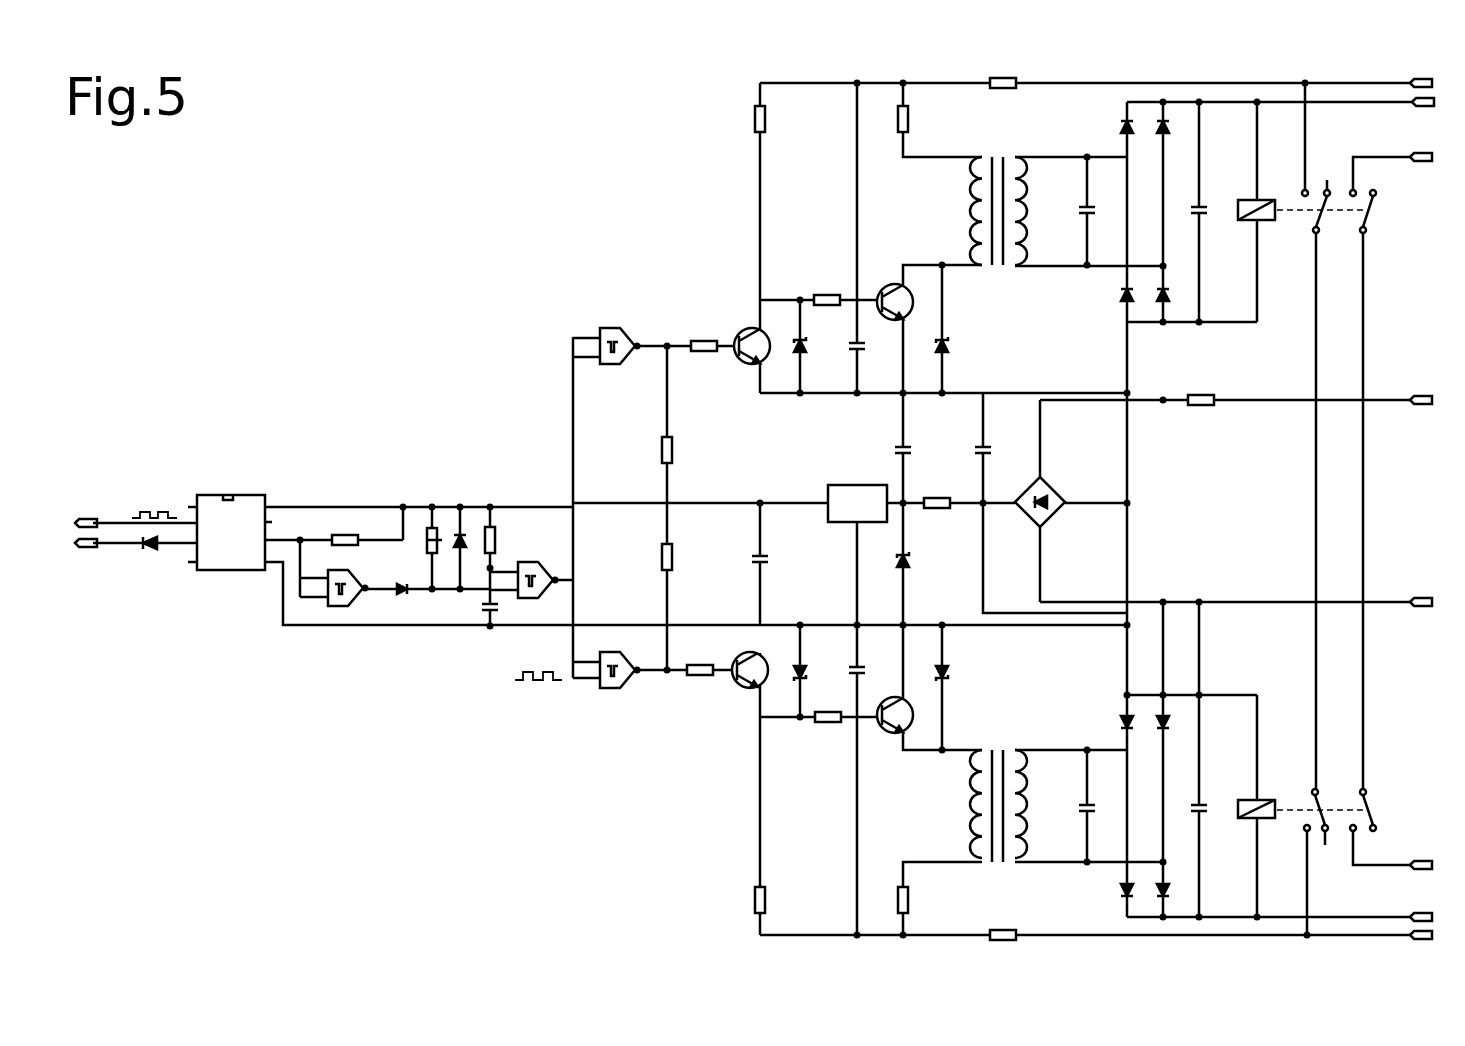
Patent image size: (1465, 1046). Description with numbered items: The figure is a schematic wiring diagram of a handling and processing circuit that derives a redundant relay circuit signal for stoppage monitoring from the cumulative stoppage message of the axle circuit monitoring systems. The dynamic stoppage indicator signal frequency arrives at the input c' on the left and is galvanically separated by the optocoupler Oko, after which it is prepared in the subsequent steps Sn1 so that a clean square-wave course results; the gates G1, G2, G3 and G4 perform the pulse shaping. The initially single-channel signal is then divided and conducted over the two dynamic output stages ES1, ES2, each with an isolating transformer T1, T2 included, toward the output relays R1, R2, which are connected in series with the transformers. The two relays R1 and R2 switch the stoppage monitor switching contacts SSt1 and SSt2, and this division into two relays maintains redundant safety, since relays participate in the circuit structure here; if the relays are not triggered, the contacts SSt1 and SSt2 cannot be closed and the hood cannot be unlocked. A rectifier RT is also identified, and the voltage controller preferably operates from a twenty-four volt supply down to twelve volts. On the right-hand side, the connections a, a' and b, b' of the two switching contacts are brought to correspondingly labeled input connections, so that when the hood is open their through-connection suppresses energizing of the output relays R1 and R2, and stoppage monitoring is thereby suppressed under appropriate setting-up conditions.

The input c' is at (85, 507).
The optocoupler Oko is at (242, 512).
The subsequent steps Sn1 is at (366, 631).
The gate G1 is at (353, 586).
The gate G2 is at (540, 562).
The gate G3 is at (616, 326).
The gate G4 is at (610, 690).
The dynamic output stage ES1 is at (734, 295).
The dynamic output stage ES2 is at (735, 766).
The isolating transformer T1 is at (1008, 137).
The isolating transformer T2 is at (1010, 873).
The rectifier RT is at (1050, 513).
The output relay R1 is at (1270, 220).
The output relay R2 is at (1260, 798).
The stoppage monitor switching contact SSt1 is at (1367, 212).
The stoppage monitor switching contact SSt2 is at (1370, 813).
The connection a is at (1430, 82).
The connection a' is at (1435, 109).
The connection b is at (1432, 912).
The connection b' is at (1435, 939).